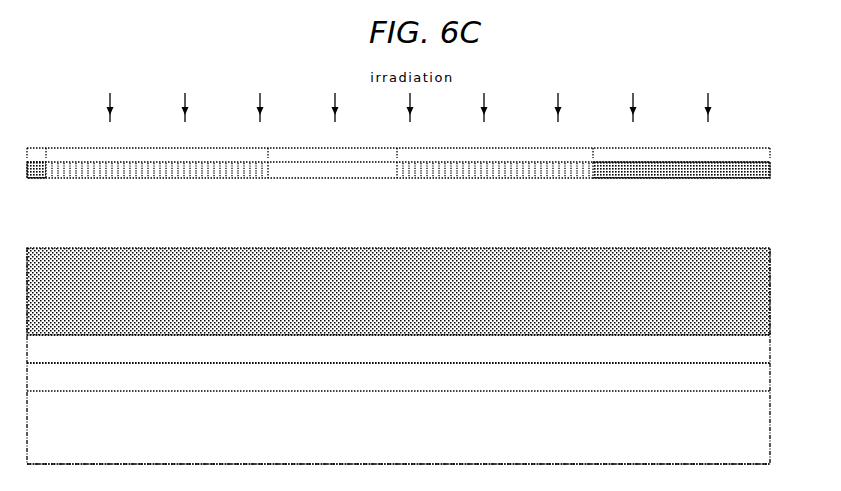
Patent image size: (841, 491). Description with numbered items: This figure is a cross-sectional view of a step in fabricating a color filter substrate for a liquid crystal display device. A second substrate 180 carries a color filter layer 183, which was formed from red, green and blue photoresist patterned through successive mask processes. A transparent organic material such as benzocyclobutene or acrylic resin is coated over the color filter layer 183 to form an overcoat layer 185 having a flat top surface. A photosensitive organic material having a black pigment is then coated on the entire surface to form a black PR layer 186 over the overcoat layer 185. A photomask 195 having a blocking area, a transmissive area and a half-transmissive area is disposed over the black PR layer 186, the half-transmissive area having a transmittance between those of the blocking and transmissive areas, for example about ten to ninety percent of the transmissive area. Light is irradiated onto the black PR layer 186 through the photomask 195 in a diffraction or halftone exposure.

The photomask 195 is at (759, 112).
The black PR layer 186 is at (360, 270).
The overcoat layer 185 is at (629, 347).
The color filter layer 183 is at (558, 377).
The second substrate 180 is at (727, 439).